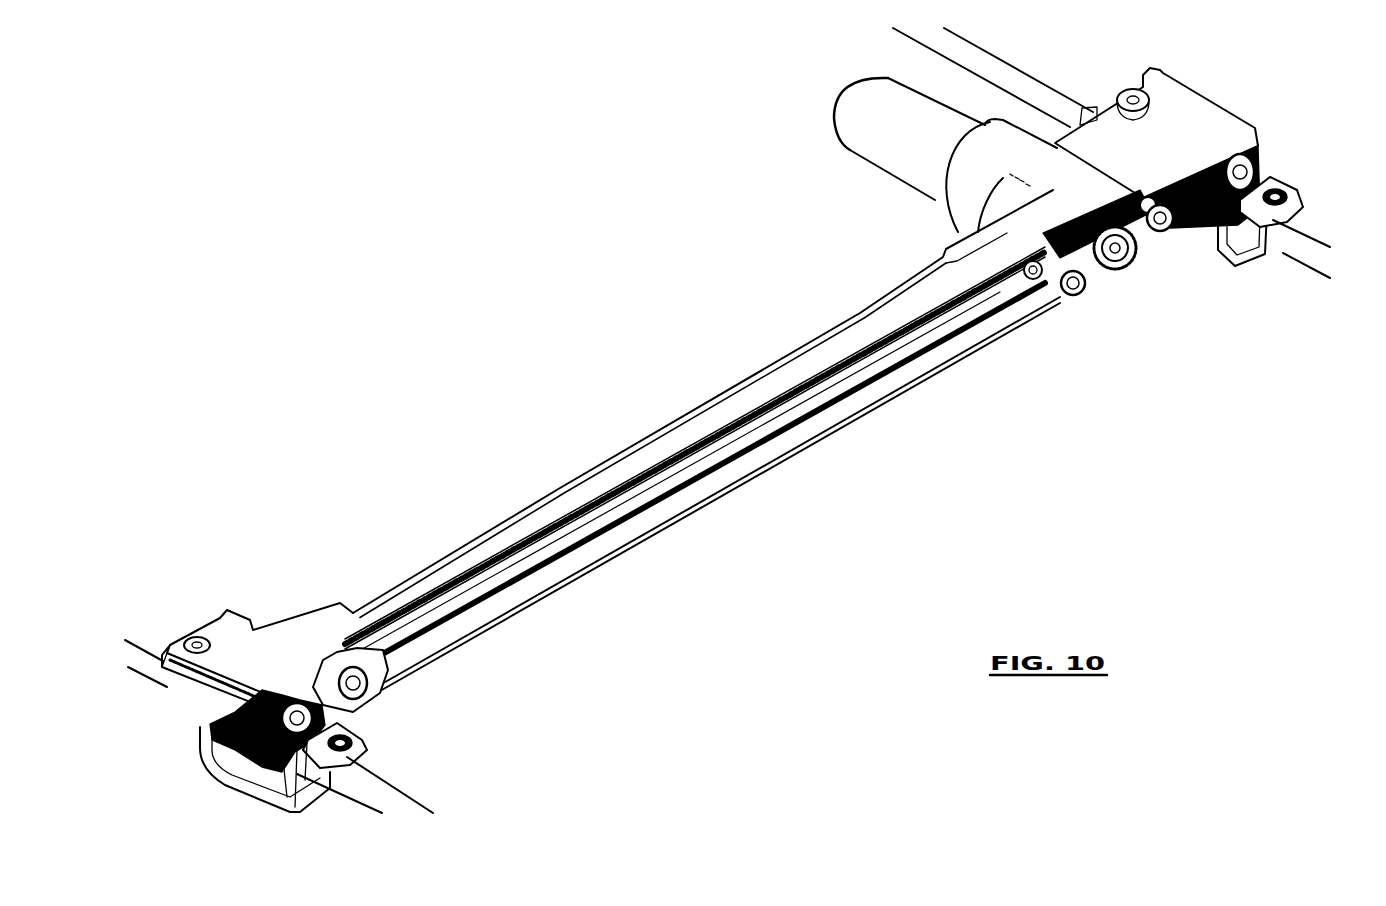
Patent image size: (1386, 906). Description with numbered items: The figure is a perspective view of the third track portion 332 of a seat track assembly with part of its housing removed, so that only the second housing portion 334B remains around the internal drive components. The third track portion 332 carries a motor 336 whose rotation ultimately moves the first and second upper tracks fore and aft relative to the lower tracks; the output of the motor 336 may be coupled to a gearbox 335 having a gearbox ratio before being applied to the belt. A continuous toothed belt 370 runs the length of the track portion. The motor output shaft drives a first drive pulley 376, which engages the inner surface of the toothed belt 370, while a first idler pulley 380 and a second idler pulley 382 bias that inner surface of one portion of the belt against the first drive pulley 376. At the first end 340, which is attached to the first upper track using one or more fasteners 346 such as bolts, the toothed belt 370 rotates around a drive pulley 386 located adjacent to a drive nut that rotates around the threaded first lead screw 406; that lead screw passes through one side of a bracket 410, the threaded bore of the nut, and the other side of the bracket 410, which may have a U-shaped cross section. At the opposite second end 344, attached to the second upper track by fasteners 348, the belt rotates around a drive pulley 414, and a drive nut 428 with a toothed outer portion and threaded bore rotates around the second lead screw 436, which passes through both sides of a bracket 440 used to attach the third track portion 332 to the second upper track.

The third track portion 332 is at (596, 448).
The second housing portion 334B is at (780, 362).
The gearbox 335 is at (947, 210).
The motor 336 is at (906, 139).
The first end 340 is at (1198, 60).
The second end 344 is at (256, 566).
The fasteners 346 is at (1127, 87).
The fasteners 348 is at (210, 638).
The toothed belt 370 is at (800, 413).
The first drive pulley 376 is at (1113, 250).
The first idler pulley 380 is at (1093, 297).
The second idler pulley 382 is at (1163, 222).
The drive pulley 386 is at (1253, 163).
The first lead screw 406 is at (983, 50).
The bracket 410 is at (1303, 193).
The drive pulley 414 is at (312, 697).
The drive nut 428 is at (252, 765).
The second lead screw 436 is at (353, 803).
The bracket 440 is at (367, 750).